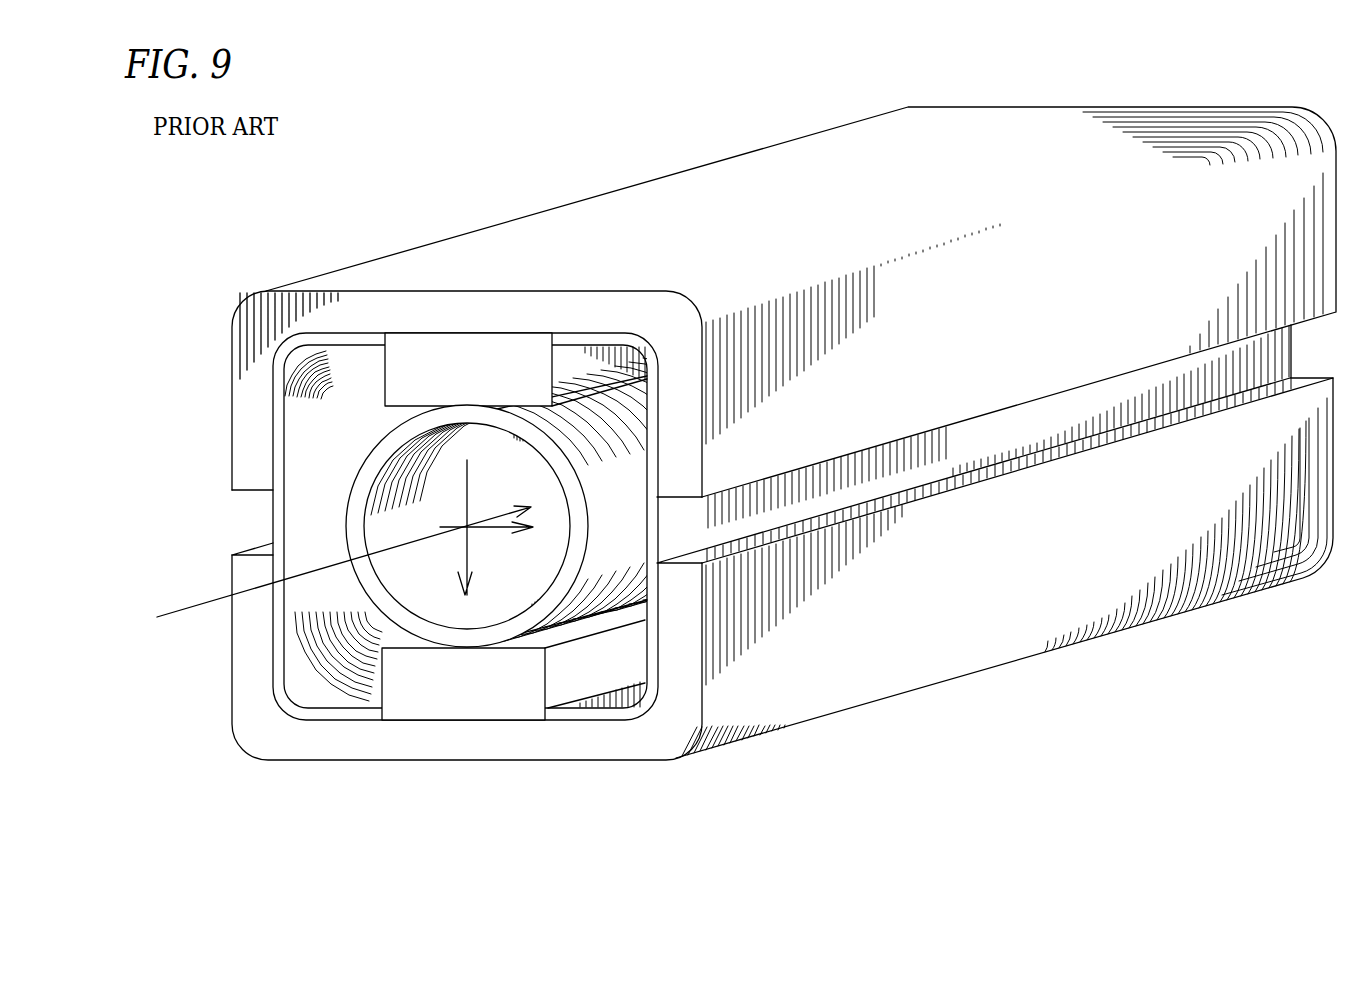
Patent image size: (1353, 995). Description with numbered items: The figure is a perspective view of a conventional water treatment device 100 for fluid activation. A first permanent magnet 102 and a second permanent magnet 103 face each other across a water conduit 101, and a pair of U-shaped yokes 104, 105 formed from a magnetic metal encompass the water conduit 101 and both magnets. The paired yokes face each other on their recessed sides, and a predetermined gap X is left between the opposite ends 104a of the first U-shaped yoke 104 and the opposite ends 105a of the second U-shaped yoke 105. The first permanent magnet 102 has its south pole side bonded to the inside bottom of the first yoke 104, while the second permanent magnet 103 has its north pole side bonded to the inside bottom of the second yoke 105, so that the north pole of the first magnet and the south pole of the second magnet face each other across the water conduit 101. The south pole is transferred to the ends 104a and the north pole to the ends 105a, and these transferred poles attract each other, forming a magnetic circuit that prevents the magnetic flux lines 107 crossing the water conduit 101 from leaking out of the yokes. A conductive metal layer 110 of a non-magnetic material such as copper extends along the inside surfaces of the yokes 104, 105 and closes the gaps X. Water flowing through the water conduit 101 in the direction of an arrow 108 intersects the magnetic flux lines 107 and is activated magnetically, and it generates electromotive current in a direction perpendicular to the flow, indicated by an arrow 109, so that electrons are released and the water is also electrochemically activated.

The water treatment device 100 is at (583, 166).
The water conduit 101 is at (378, 598).
The first permanent magnet 102 is at (420, 391).
The second permanent magnet 103 is at (415, 662).
The first U-shaped yoke 104 is at (333, 308).
The opposite ends of the first U-shaped yoke 104a is at (240, 472).
The second U-shaped yoke 105 is at (597, 742).
The opposite ends of the second U-shaped yoke 105a is at (237, 572).
The magnetic flux lines 107 is at (501, 529).
The arrow indicating water flow direction 108 is at (197, 608).
The arrow indicating electromotive current direction 109 is at (540, 593).
The conductive metal layer 110 is at (283, 352).
The gap X is at (250, 512).